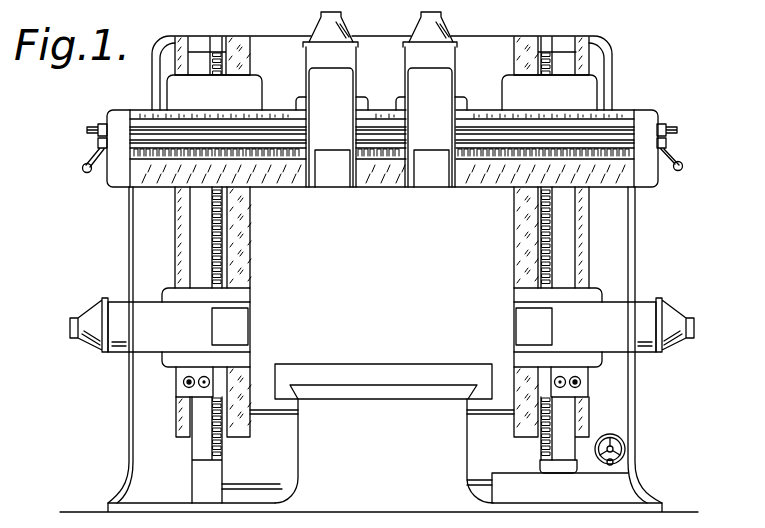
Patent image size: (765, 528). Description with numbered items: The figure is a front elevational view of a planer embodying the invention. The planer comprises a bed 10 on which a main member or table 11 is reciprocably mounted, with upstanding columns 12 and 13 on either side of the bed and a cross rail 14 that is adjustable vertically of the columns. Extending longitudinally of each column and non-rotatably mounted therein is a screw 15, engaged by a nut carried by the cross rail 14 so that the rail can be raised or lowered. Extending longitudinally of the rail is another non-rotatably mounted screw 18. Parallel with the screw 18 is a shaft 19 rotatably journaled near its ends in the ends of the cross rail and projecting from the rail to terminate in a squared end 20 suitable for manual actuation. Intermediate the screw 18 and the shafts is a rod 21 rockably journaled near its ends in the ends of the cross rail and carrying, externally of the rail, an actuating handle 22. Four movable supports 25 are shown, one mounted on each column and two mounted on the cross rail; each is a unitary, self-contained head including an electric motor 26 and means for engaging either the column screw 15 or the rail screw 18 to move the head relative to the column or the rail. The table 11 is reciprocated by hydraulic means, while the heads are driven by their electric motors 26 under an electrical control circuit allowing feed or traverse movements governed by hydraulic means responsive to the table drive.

The bed 10 is at (396, 447).
The table 11 is at (346, 372).
The column 12 is at (618, 254).
The column 13 is at (146, 276).
The cross rail 14 is at (279, 165).
The screw 15 is at (227, 273).
The screw 18 is at (478, 162).
The shaft 19 is at (617, 136).
The squared end 20 is at (677, 122).
The rod 21 is at (623, 170).
The actuating handle 22 is at (673, 153).
The movable support 25 is at (337, 190).
The electric motor 26 is at (441, 47).